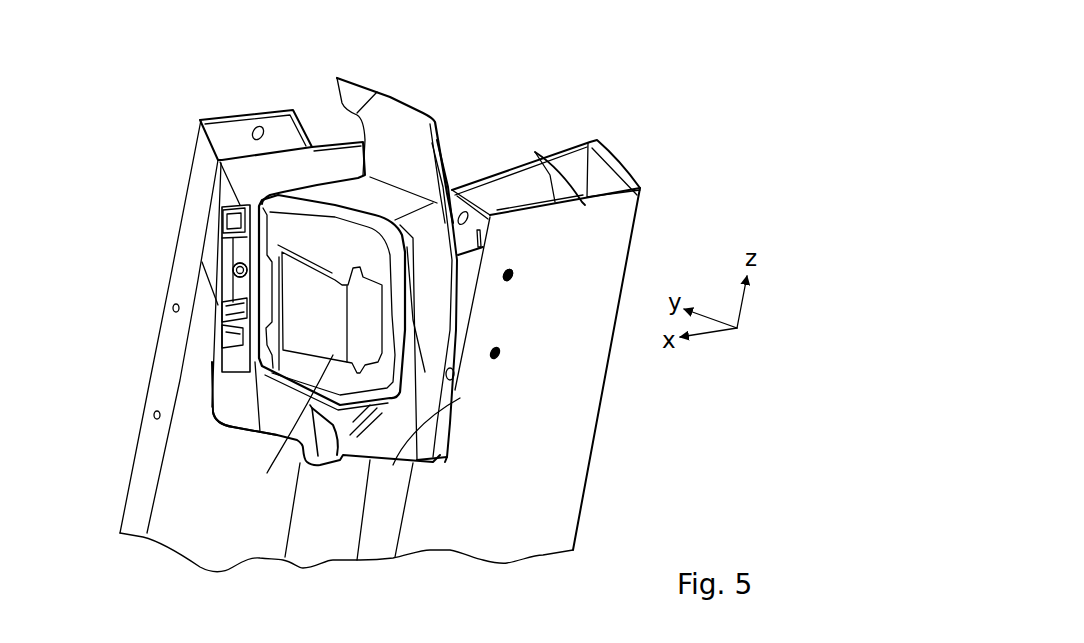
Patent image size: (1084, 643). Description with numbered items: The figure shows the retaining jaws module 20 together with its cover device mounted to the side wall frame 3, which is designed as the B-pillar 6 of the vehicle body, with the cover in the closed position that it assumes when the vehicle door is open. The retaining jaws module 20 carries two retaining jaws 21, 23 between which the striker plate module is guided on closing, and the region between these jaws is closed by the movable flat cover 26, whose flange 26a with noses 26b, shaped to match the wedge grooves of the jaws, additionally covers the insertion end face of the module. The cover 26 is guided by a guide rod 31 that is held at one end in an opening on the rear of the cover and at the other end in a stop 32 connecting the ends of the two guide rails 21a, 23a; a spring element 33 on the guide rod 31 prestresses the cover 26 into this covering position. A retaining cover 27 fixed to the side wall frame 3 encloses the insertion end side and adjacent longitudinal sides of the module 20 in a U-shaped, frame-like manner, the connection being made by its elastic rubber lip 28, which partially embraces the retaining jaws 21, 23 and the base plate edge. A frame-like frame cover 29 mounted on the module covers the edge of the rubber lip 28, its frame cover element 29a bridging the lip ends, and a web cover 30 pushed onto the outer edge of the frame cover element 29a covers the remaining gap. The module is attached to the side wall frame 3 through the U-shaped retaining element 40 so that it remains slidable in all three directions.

The side wall frame 3 is at (248, 110).
The B-pillar 6 is at (497, 140).
The retaining jaws module 20 is at (390, 303).
The retaining jaw 21 is at (313, 173).
The guide rail 21a is at (240, 205).
The retaining jaw 23 is at (336, 424).
The guide rail 23a is at (240, 330).
The cover 26 is at (324, 322).
The flange 26a is at (407, 362).
The noses 26b is at (430, 249).
The retaining cover 27 is at (402, 135).
The rubber lip 28 is at (267, 433).
The frame cover 29 is at (388, 379).
The frame cover element 29a is at (270, 306).
The web cover 30 is at (260, 208).
The guide rod 31 is at (229, 250).
The stop 32 is at (228, 248).
The spring element 33 is at (240, 270).
The retaining element 40 is at (465, 287).